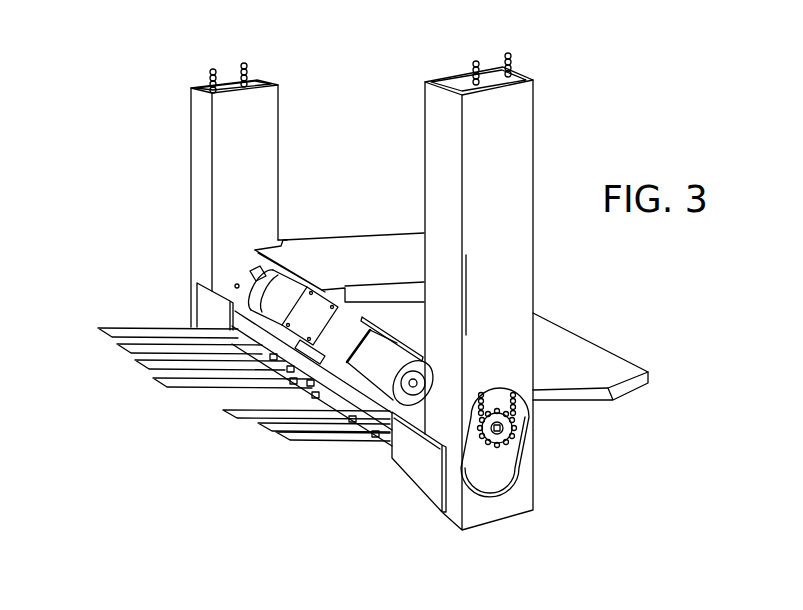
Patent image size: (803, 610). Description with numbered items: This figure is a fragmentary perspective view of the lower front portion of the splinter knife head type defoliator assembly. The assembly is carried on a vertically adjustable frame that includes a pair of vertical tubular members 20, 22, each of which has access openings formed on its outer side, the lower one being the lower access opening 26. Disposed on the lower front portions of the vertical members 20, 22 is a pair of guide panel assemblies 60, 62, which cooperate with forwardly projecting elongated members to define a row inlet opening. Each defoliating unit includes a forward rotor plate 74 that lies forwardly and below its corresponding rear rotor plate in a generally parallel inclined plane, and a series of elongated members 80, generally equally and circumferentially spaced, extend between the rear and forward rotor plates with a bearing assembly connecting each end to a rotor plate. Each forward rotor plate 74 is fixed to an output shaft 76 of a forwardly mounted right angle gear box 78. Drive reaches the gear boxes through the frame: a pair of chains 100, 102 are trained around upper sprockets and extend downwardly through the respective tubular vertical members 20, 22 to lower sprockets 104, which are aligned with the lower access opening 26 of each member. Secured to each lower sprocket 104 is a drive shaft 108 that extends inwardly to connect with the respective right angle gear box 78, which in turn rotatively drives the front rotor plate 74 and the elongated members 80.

The vertical tubular member 20 is at (523, 143).
The vertical tubular member 22 is at (268, 158).
The lower access opening 26 is at (524, 474).
The guide panel assembly 60 is at (598, 363).
The guide panel assembly 62 is at (340, 250).
The forward rotor plate 74 is at (213, 327).
The output shaft 76 is at (312, 346).
The right angle gear box 78 is at (262, 305).
The elongated members 80 is at (223, 410).
The chain 100 is at (513, 63).
The chain 102 is at (247, 67).
The lower sprocket 104 is at (503, 428).
The drive shaft 108 is at (283, 302).